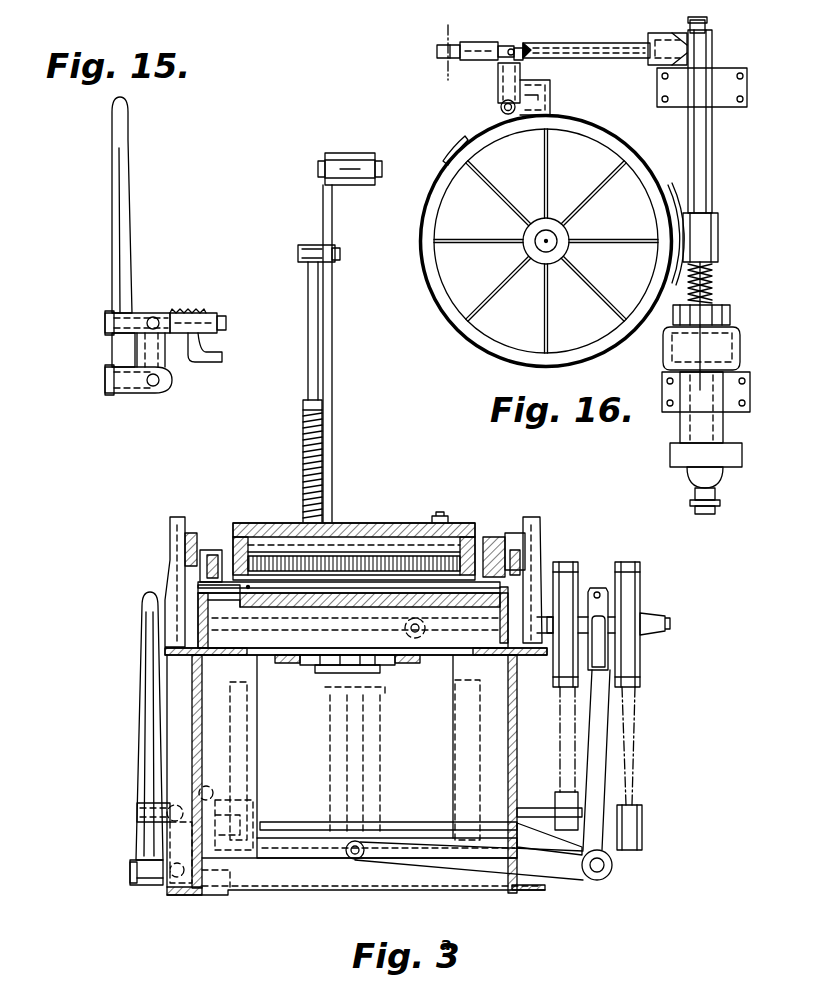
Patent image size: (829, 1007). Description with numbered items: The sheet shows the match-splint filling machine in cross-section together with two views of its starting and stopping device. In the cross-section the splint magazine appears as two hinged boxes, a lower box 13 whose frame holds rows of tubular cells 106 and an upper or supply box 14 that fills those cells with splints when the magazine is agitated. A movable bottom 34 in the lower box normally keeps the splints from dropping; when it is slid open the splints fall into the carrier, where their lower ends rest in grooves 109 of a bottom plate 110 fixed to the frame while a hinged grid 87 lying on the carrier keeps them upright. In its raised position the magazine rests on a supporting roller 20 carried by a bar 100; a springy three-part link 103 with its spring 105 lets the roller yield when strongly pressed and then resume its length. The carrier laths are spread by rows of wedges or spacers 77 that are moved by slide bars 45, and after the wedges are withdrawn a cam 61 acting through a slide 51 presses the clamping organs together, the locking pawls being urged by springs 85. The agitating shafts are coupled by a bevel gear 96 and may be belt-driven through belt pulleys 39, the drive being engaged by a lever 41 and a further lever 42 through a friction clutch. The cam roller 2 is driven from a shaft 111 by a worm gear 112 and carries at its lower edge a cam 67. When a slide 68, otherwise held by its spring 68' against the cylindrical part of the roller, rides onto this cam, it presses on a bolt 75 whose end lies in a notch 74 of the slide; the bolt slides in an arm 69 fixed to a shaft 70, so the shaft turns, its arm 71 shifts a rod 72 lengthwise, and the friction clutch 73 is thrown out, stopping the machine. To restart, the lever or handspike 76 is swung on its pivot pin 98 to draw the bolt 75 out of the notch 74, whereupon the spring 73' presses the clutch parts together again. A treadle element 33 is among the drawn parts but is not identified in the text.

In FIG. 16, the cam roller 2 is at (456, 331).
In FIG. 3A, the lower box of the splint magazine 13 is at (478, 548).
In FIG. 3A, the upper or supply box of the splint magazine 14 is at (372, 545).
In FIG. 3A, the supporting roller 20 is at (362, 185).
In FIG. 3A, the screw 33 is at (440, 520).
In FIG. 3A, the movable bottom 34 is at (255, 553).
In FIG. 3A, the belt pulleys 39 is at (627, 575).
In FIG. 3A, the lever 41 is at (470, 866).
In FIG. 3A, the lever 42 is at (600, 770).
In FIG. 3A, the slide bars 45 is at (200, 594).
In FIG. 3A, the slide 51 is at (300, 656).
In FIG. 3A, the cam 61 is at (326, 673).
In FIG. 16, the cam 67 is at (451, 147).
In FIG. 15, the slide 68 is at (205, 324).
In FIG. 16, the slide 68 is at (486, 88).
In FIG. 16, the spring 68' is at (563, 84).
In FIG. 15, the arm 69 is at (166, 362).
In FIG. 16, the arm 69 is at (478, 42).
In FIG. 3A, the arm 69 is at (192, 893).
In FIG. 16, the shaft 70 is at (596, 43).
In FIG. 3A, the shaft 70 is at (160, 890).
In FIG. 16, the arm 71 is at (656, 40).
In FIG. 16, the rod 72 is at (688, 140).
In FIG. 16, the friction clutch 73 is at (718, 420).
In FIG. 16, the spring 73' is at (720, 326).
In FIG. 16, the notch 74 is at (520, 48).
In FIG. 15, the bolt 75 is at (153, 313).
In FIG. 16, the bolt 75 is at (508, 46).
In FIG. 3A, the bolt 75 is at (165, 810).
In FIG. 15, the lever or handspike 76 is at (133, 215).
In FIG. 3A, the lever or handspike 76 is at (140, 757).
In FIG. 3A, the wedges or spacers 77 is at (227, 580).
In FIG. 3A, the springs 85 is at (316, 597).
In FIG. 3A, the grid 87 is at (274, 610).
In FIG. 3A, the bevel gear 96 is at (413, 640).
In FIG. 15, the pivot pin 98 is at (128, 395).
In FIG. 3A, the bar 100 is at (332, 285).
In FIG. 3A, the springy three-part link 103 is at (308, 322).
In FIG. 3A, the spring 105 is at (303, 428).
In FIG. 3A, the tubes or tubular cells 106 is at (348, 555).
In FIG. 3A, the grooves 109 is at (382, 610).
In FIG. 3A, the bottom plate 110 is at (290, 607).
In FIG. 16, the shaft 111 is at (700, 190).
In FIG. 16, the worm gear 112 is at (718, 232).